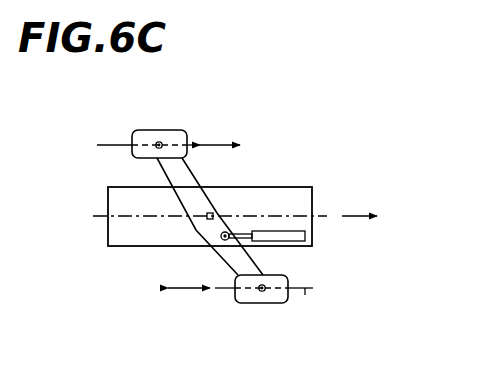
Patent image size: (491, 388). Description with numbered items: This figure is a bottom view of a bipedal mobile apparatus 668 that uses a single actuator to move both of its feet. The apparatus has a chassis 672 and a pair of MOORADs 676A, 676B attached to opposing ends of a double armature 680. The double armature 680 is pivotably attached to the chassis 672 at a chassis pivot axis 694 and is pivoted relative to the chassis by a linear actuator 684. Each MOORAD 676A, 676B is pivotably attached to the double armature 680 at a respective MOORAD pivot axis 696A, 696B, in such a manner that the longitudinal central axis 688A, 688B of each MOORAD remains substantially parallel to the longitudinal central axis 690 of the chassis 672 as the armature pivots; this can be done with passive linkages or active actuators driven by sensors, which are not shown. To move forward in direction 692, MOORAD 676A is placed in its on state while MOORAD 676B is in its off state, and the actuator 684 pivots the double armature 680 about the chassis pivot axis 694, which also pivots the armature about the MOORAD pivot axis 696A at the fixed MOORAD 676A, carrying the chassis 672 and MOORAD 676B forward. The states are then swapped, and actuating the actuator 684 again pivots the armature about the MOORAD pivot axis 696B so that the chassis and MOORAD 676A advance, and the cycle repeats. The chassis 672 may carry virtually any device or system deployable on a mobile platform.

The bipedal mobile apparatus 668 is at (298, 131).
The chassis 672 is at (127, 237).
The MOORAD 676A is at (260, 303).
The MOORAD 676B is at (180, 131).
The double armature 680 is at (188, 178).
The linear actuator 684 is at (293, 236).
The longitudinal central axis 688A is at (305, 295).
The longitudinal central axis 688B is at (107, 145).
The longitudinal central axis 690 is at (95, 214).
The direction 692 is at (352, 215).
The chassis pivot axis 694 is at (213, 213).
The MOORAD pivot axis 696A is at (262, 288).
The MOORAD pivot axis 696B is at (159, 142).